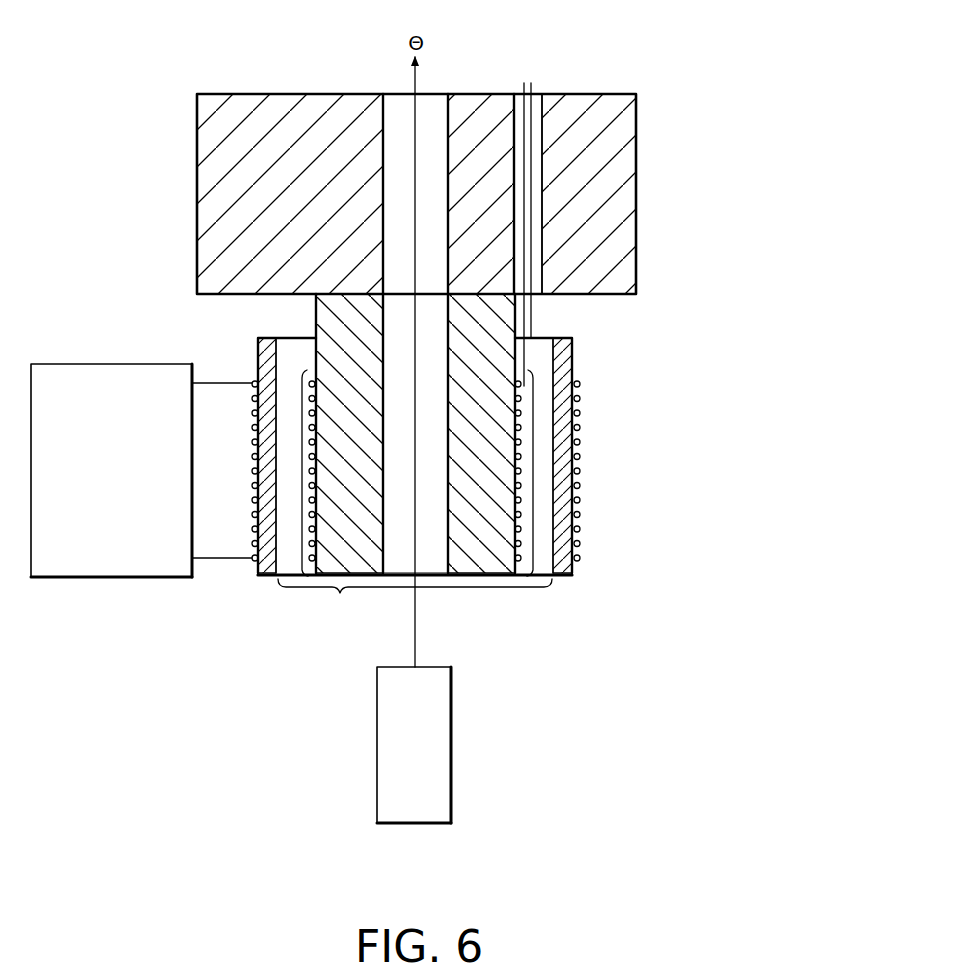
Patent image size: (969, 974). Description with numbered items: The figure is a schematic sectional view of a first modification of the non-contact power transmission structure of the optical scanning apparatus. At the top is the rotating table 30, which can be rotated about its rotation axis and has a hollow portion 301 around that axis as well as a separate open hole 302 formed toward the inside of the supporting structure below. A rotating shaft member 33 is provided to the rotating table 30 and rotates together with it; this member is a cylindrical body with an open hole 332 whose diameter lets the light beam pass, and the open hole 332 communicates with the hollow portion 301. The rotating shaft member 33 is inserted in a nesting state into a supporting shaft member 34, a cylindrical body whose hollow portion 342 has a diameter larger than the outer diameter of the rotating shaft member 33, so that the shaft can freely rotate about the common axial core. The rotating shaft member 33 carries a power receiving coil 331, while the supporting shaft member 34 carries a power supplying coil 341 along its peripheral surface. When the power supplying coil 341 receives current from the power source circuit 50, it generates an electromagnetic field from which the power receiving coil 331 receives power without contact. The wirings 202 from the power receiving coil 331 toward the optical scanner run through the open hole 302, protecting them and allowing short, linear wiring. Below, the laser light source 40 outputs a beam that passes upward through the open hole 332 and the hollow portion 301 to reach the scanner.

The rotating table 30 is at (636, 138).
The hollow portion 301 is at (396, 91).
The open hole 302 is at (543, 90).
The rotating shaft member 33 is at (315, 305).
The wirings 202 is at (532, 305).
The supporting shaft member 34 is at (556, 576).
The power receiving coil 331 is at (301, 472).
The power supplying coil 341 is at (253, 372).
The open hole 332 is at (439, 578).
The hollow portion 342 is at (415, 598).
The power source circuit 50 is at (110, 364).
The laser light source 40 is at (451, 775).